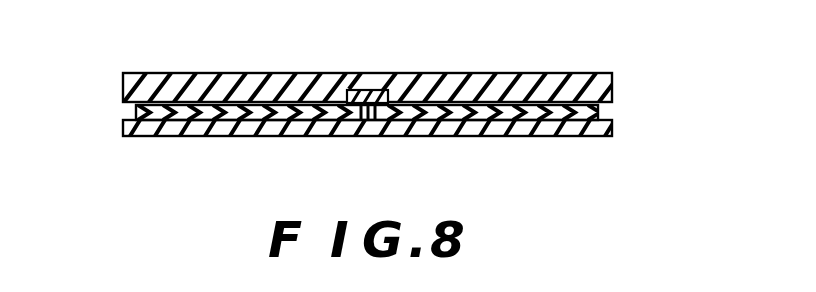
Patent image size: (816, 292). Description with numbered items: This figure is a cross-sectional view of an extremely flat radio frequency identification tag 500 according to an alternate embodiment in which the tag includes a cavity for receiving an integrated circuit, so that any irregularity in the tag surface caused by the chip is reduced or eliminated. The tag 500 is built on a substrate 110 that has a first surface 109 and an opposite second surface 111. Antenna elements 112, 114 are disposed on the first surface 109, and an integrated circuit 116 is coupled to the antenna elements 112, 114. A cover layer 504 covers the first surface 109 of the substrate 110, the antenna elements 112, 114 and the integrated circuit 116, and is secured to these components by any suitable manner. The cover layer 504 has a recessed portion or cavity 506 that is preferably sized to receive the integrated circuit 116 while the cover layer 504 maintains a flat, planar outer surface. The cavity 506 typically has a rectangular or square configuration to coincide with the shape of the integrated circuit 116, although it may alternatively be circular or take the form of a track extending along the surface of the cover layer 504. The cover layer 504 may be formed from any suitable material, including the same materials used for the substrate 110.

The radio frequency identification tag 500 is at (391, 106).
The cover layer 504 is at (258, 85).
The cavity 506 is at (360, 94).
The antenna element 114 is at (197, 113).
The antenna element 112 is at (552, 110).
The integrated circuit 116 is at (368, 96).
The substrate 110 is at (193, 128).
The second surface 111 is at (372, 117).
The first surface 109 is at (613, 112).